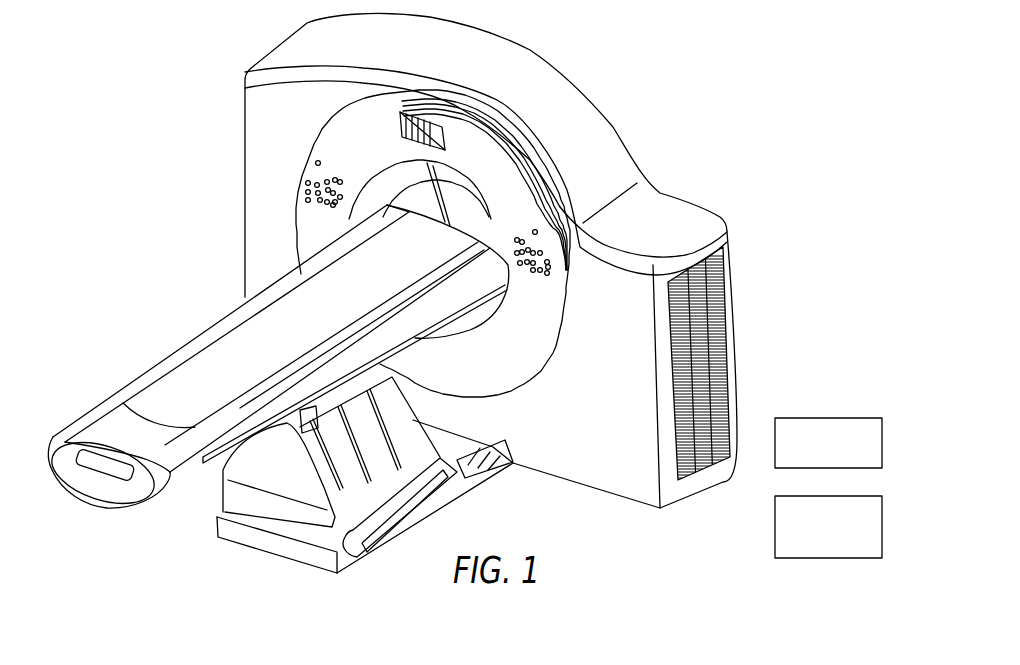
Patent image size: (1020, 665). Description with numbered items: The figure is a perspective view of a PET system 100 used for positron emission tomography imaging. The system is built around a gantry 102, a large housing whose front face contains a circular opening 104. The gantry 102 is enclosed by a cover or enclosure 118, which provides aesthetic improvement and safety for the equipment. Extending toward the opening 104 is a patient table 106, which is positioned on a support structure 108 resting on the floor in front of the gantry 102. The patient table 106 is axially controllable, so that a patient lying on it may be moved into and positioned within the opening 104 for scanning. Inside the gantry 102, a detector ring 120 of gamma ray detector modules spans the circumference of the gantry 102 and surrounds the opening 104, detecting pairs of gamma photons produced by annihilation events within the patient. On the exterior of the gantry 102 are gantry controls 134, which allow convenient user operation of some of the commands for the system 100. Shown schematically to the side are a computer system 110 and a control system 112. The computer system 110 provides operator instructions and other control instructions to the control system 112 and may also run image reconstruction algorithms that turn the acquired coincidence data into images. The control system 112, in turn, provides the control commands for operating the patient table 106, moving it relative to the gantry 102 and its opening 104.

The PET system 100 is at (737, 91).
The gantry 102 is at (293, 52).
The opening 104 is at (357, 127).
The patient table 106 is at (173, 490).
The support structure 108 is at (383, 520).
The computer system 110 is at (855, 417).
The control system 112 is at (800, 560).
The cover 118 is at (583, 100).
The detector ring 120 is at (447, 198).
The gantry controls 134 is at (530, 303).